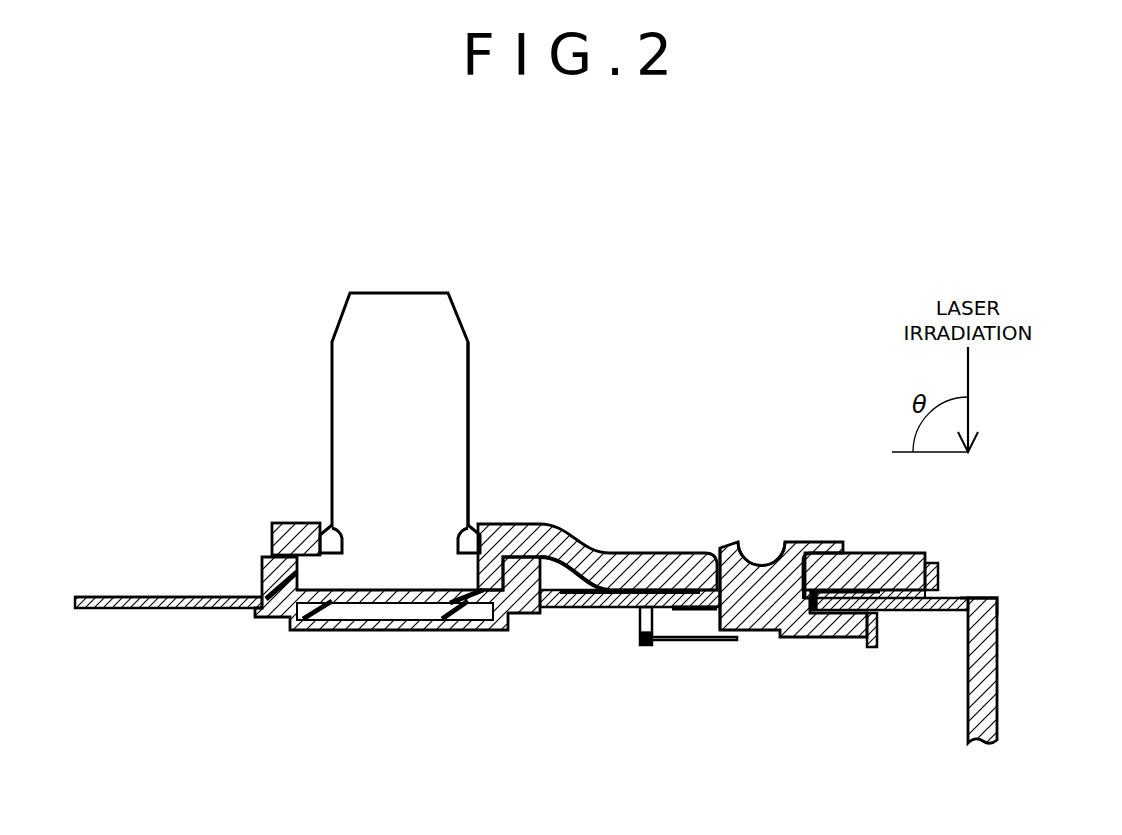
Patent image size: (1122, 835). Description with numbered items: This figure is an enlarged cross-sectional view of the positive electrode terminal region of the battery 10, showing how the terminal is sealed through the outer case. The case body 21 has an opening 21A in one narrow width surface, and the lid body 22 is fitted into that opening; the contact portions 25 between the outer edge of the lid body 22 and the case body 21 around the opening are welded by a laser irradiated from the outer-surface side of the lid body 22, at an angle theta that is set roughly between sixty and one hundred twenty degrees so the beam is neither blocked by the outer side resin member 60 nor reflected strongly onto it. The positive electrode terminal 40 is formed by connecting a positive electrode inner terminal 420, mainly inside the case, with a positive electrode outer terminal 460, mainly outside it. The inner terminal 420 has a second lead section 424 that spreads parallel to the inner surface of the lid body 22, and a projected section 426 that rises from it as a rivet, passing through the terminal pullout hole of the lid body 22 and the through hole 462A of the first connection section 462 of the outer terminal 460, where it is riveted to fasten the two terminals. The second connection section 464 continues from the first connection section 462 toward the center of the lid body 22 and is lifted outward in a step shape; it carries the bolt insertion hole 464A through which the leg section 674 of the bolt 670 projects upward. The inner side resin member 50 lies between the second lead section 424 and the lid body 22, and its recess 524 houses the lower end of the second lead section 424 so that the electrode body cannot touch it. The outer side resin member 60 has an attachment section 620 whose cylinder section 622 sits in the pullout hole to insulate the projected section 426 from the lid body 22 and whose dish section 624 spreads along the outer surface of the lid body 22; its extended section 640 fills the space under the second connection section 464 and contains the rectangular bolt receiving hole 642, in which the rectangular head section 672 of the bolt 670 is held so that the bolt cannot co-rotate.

The semiconductor device 10 is at (797, 237).
The case body 21 is at (1000, 719).
The opening 21A is at (916, 625).
The lid body 22 is at (110, 597).
The contact portions 25 is at (990, 600).
The positive electrode terminal 40 is at (822, 705).
The inner side resin member 50 is at (635, 637).
The outer side resin member 60 is at (262, 556).
The positive electrode inner terminal 420 is at (792, 645).
The second lead section 424 is at (850, 640).
The projected section 426 is at (764, 540).
The positive electrode outer terminal 460 is at (555, 522).
The first connection section 462 is at (858, 552).
The through hole 462A is at (724, 583).
The second connection section 464 is at (505, 523).
The bolt insertion hole 464A is at (345, 552).
The recess 524 is at (662, 608).
The attachment section 620 is at (935, 575).
The cylinder section 622 is at (690, 615).
The dish section 624 is at (612, 588).
The extended section 640 is at (472, 632).
The bolt receiving hole 642 is at (330, 592).
The bolt 670 is at (368, 289).
The head section 672 is at (388, 620).
The leg section 674 is at (465, 360).